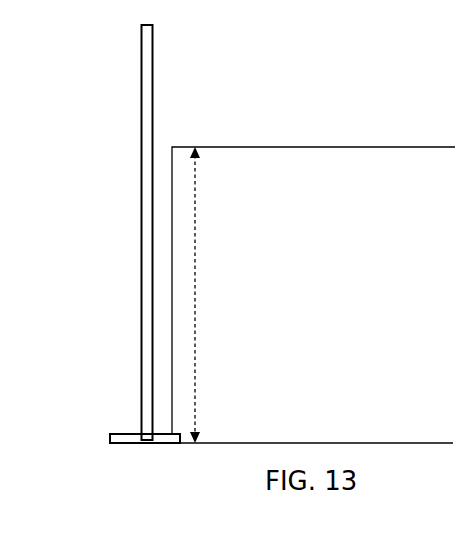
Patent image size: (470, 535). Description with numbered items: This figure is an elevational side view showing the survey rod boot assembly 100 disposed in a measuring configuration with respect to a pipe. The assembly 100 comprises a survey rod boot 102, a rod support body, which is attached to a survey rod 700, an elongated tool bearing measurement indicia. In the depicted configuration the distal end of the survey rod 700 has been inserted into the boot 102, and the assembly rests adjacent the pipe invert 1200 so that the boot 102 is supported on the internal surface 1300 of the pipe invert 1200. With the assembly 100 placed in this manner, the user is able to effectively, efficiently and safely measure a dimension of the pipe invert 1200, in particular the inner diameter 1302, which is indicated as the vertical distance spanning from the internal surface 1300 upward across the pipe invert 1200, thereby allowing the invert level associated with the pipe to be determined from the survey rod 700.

The survey rod boot assembly 100 is at (121, 234).
The survey rod boot 102 is at (130, 440).
The survey rod 700 is at (142, 172).
The pipe invert 1200 is at (279, 146).
The internal surface 1300 is at (263, 436).
The inner diameter 1302 is at (195, 331).